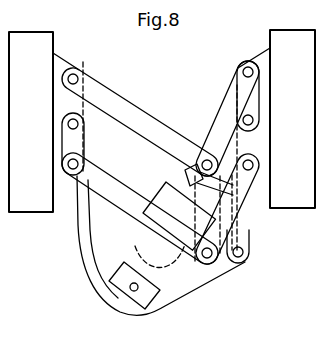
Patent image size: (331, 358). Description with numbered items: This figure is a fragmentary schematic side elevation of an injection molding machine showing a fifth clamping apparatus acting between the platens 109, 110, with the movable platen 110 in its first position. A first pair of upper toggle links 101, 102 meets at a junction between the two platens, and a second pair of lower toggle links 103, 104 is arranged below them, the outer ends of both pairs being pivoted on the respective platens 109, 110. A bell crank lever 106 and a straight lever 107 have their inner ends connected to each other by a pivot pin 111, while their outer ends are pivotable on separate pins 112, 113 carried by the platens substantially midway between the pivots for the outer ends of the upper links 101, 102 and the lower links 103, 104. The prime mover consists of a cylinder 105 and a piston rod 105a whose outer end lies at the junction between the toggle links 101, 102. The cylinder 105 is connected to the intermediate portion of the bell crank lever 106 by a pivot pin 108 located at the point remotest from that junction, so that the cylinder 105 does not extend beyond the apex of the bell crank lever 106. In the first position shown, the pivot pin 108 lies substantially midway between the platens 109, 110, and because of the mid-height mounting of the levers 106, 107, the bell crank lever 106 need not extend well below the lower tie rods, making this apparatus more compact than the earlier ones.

The toggle link 101 is at (117, 110).
The toggle link 102 is at (222, 112).
The toggle link 103 is at (83, 223).
The toggle link 104 is at (250, 226).
The cylinder 105 is at (175, 284).
The piston rod 105a is at (168, 169).
The bell crank lever 106 is at (90, 250).
The straight lever 107 is at (250, 247).
The pivot pin 108 is at (132, 291).
The platen 109 is at (37, 192).
The movable platen 110 is at (281, 190).
The pivot pin 111 is at (243, 260).
The pin 112 is at (63, 124).
The pin 113 is at (259, 117).